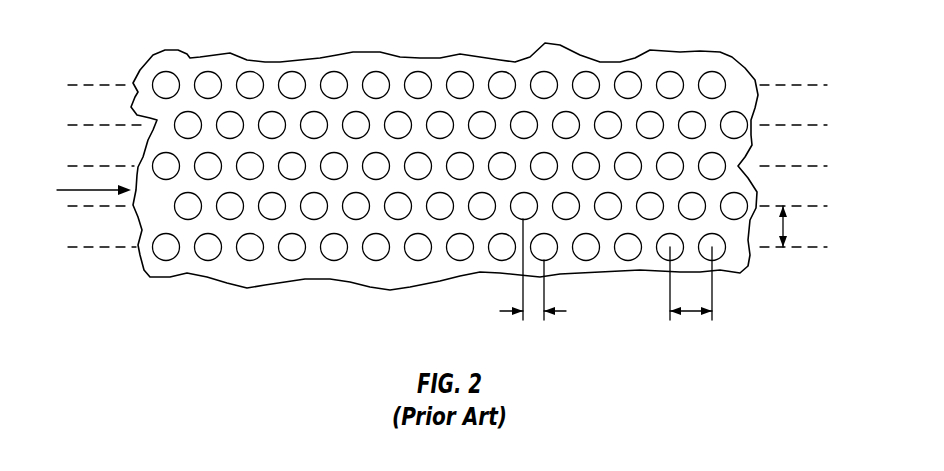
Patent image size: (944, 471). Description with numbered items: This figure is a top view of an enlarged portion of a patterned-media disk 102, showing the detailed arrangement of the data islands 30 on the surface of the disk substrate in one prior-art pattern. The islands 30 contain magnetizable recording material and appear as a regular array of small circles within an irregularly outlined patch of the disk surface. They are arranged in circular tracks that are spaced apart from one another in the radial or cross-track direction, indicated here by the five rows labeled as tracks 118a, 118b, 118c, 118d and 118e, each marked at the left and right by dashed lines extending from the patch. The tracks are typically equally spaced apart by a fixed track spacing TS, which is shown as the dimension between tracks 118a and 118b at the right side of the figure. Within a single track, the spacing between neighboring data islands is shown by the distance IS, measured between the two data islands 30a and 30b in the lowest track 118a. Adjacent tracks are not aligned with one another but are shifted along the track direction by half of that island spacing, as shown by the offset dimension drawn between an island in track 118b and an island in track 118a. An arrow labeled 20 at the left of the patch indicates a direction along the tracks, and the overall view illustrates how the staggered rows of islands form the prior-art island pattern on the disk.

The web/material flow direction 20 is at (77, 190).
The data islands 30 is at (471, 162).
The data island 30a is at (662, 259).
The data island 30b is at (714, 259).
The disk 102 is at (247, 288).
The track 118a is at (470, 262).
The track 118b is at (800, 205).
The track 118c is at (800, 165).
The track 118d is at (800, 124).
The track 118e is at (800, 84).
The track spacing TS is at (774, 226).
The island spacing IS is at (691, 283).